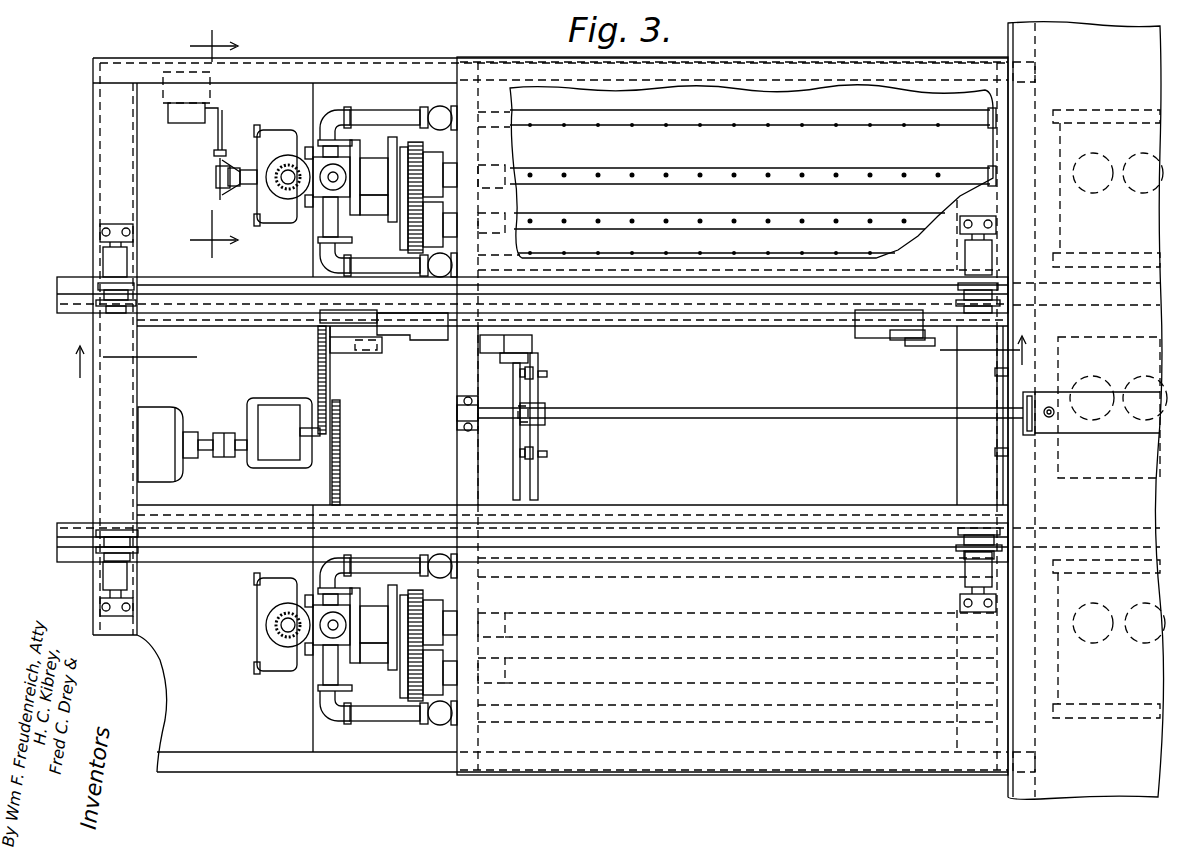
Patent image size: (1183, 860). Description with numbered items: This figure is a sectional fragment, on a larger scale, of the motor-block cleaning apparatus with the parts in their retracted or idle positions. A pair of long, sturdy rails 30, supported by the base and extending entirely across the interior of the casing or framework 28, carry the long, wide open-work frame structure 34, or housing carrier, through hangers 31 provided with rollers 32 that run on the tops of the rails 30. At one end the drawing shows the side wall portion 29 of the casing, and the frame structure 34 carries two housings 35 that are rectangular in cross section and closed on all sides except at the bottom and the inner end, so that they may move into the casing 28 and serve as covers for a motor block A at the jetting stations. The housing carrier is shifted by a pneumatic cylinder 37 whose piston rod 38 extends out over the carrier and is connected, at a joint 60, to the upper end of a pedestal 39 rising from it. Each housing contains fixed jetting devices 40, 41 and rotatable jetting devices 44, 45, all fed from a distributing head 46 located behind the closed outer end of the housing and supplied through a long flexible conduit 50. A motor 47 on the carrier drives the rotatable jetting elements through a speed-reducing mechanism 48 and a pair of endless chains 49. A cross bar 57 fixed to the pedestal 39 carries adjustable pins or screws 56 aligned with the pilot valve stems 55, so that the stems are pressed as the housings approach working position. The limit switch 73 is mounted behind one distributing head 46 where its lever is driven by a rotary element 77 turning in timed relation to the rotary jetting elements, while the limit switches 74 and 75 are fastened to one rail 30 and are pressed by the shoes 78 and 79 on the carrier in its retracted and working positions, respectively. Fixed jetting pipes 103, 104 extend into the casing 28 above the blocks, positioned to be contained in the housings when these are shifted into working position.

The casing or framework 28 is at (1040, 102).
The side wall panel 29 is at (1062, 46).
The rails 30 is at (60, 300).
The hangers 31 is at (110, 248).
The rollers 32 is at (103, 280).
The open-work frame structure 34 is at (93, 62).
The housings 35 is at (808, 57).
The cylinder 37 is at (1118, 422).
The piston rod 38 is at (775, 410).
The pedestal 39 is at (516, 420).
The jetting device 40 is at (640, 120).
The jetting device 41 is at (700, 250).
The rotatable jetting device 44 is at (735, 167).
The rotatable jetting device 45 is at (800, 207).
The distributing head 46 is at (314, 160).
The motor 47 is at (168, 408).
The speed-reducing mechanism 48 is at (275, 406).
The endless chains or belts 49 is at (316, 350).
The flexible conduit 50 is at (286, 195).
The pilot valve stems 55 is at (995, 373).
The adjustable pins or screws 56 is at (548, 375).
The cross bar 57 is at (545, 398).
The pin 60 is at (1052, 406).
The limit switch 73 is at (178, 116).
The limit switch 74 is at (433, 342).
The limit switch 75 is at (870, 342).
The rotary element 77 is at (215, 176).
The shoe 78 is at (350, 352).
The shoe 79 is at (530, 343).
The jetting pipe 103 is at (1102, 256).
The jetting pipe 104 is at (1124, 116).
The motor block A is at (1058, 146).